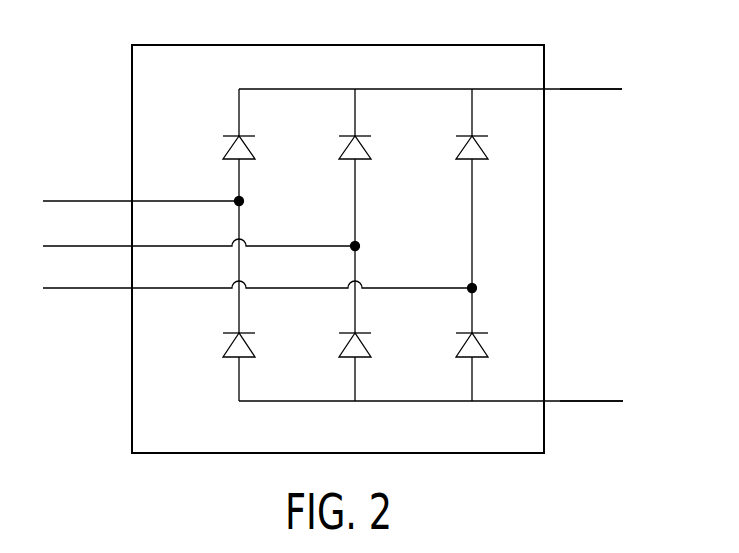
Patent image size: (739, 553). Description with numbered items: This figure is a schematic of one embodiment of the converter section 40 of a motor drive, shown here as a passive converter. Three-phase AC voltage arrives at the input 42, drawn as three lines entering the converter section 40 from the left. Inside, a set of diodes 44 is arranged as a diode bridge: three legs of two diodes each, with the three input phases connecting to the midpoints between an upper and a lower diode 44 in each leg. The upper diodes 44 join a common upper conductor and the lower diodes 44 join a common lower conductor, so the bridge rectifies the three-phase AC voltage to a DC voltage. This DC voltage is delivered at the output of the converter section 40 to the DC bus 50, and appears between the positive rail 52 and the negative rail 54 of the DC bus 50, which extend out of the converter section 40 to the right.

The converter section 40 is at (235, 45).
The input 42 is at (120, 194).
The diodes 44 is at (253, 158).
The DC bus 50 is at (567, 99).
The positive rail 52 is at (587, 89).
The negative rail 54 is at (590, 402).